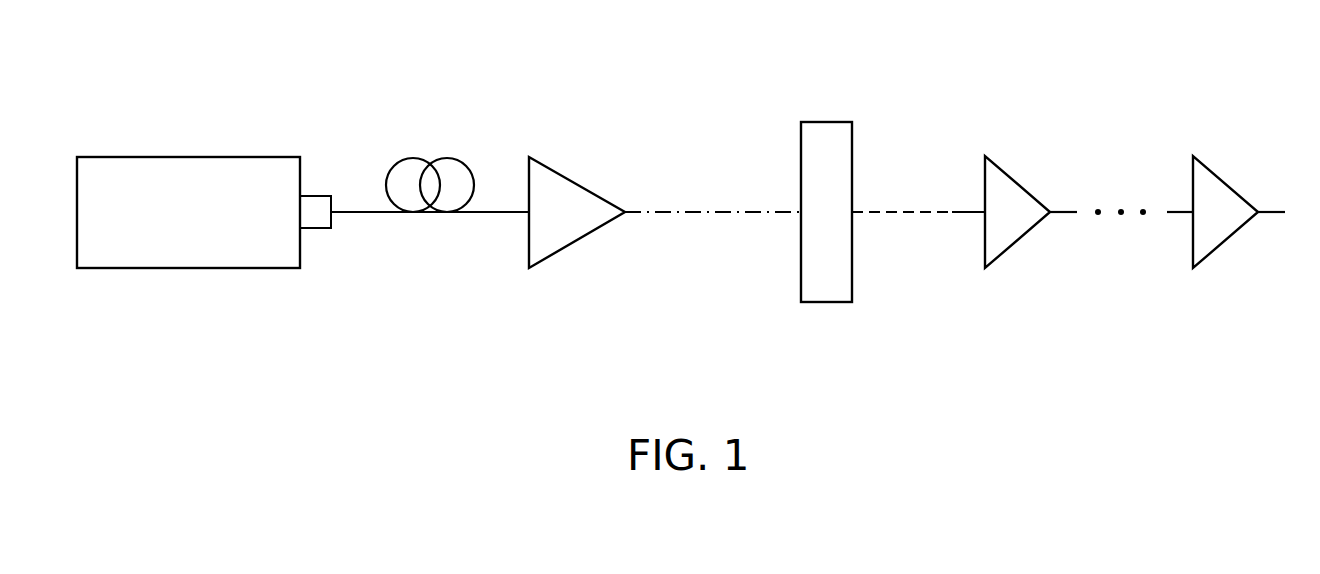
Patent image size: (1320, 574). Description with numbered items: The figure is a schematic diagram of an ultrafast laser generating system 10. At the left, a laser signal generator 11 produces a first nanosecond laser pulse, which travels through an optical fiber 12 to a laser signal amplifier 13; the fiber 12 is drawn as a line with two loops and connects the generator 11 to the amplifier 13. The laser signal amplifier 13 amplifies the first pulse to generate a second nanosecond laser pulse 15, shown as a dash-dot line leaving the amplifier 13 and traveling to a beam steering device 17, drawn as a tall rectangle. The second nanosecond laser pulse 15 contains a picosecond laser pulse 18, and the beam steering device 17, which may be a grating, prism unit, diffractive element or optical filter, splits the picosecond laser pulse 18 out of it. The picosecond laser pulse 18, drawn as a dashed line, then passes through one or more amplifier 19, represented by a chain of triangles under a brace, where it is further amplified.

The ultrafast laser generating system 10 is at (1095, 400).
The laser signal generator 11 is at (190, 157).
The optical fiber 12 is at (496, 211).
The laser signal amplifier 13 is at (580, 182).
The second nanosecond laser pulse 15 is at (710, 211).
The beam steering device 17 is at (827, 122).
The picosecond laser pulse 18 is at (928, 211).
The amplifier 19 is at (960, 133).